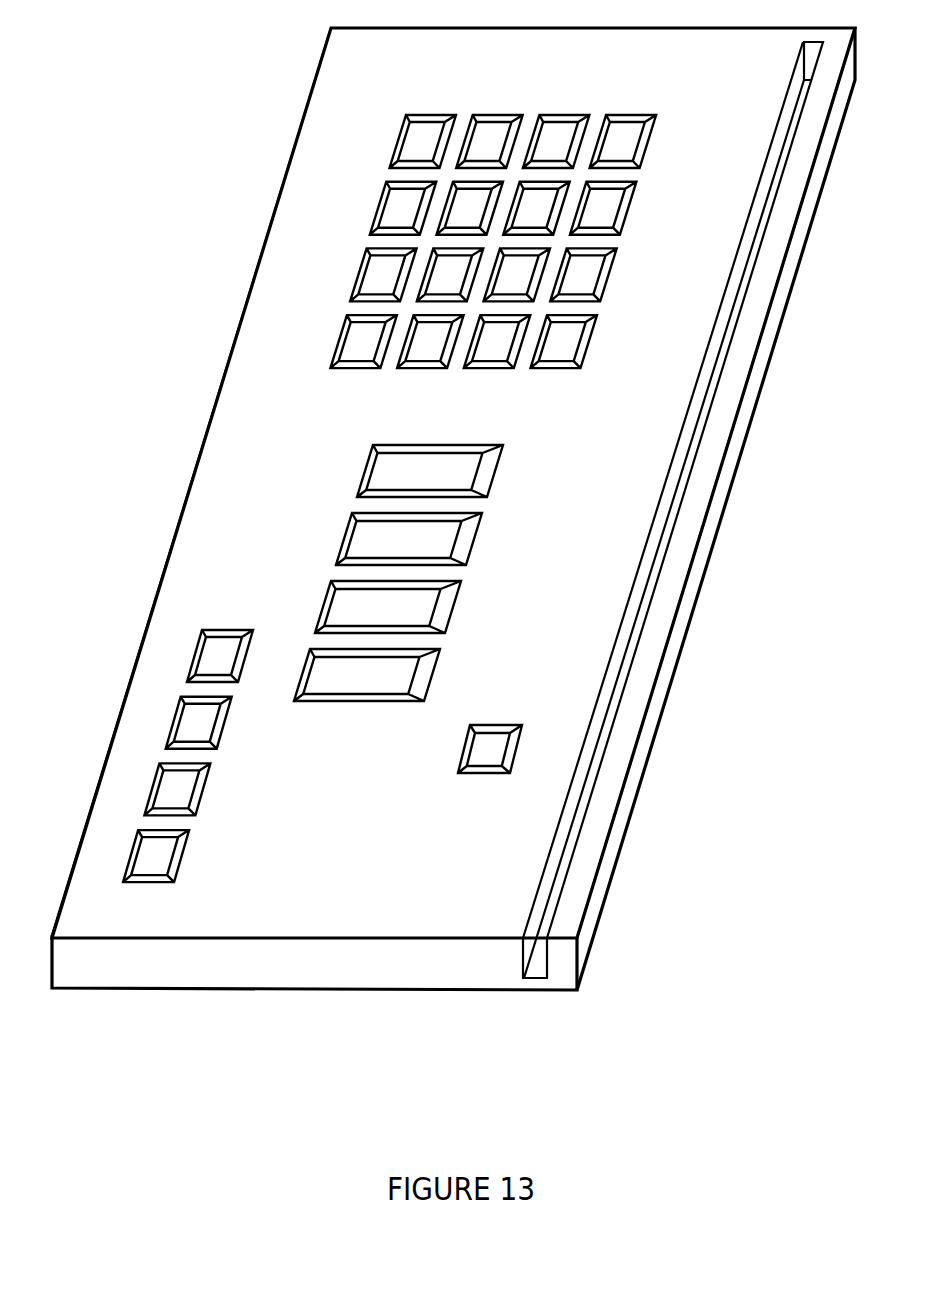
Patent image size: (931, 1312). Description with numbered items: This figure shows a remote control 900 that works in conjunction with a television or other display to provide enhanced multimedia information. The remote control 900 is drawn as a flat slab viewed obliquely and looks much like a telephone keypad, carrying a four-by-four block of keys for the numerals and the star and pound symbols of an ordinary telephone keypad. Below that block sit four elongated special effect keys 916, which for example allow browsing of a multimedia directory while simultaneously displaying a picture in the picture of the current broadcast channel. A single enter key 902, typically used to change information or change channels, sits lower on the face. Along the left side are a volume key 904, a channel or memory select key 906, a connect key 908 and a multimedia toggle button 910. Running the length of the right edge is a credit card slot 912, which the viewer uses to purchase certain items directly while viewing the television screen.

The remote control 900 is at (308, 1075).
The enter key 902 is at (492, 724).
The volume key 904 is at (192, 660).
The channel or memory select key 906 is at (172, 725).
The connect key 908 is at (153, 782).
The multimedia toggle button 910 is at (135, 855).
The credit card slot 912 is at (656, 585).
The special effect keys 916 is at (503, 447).